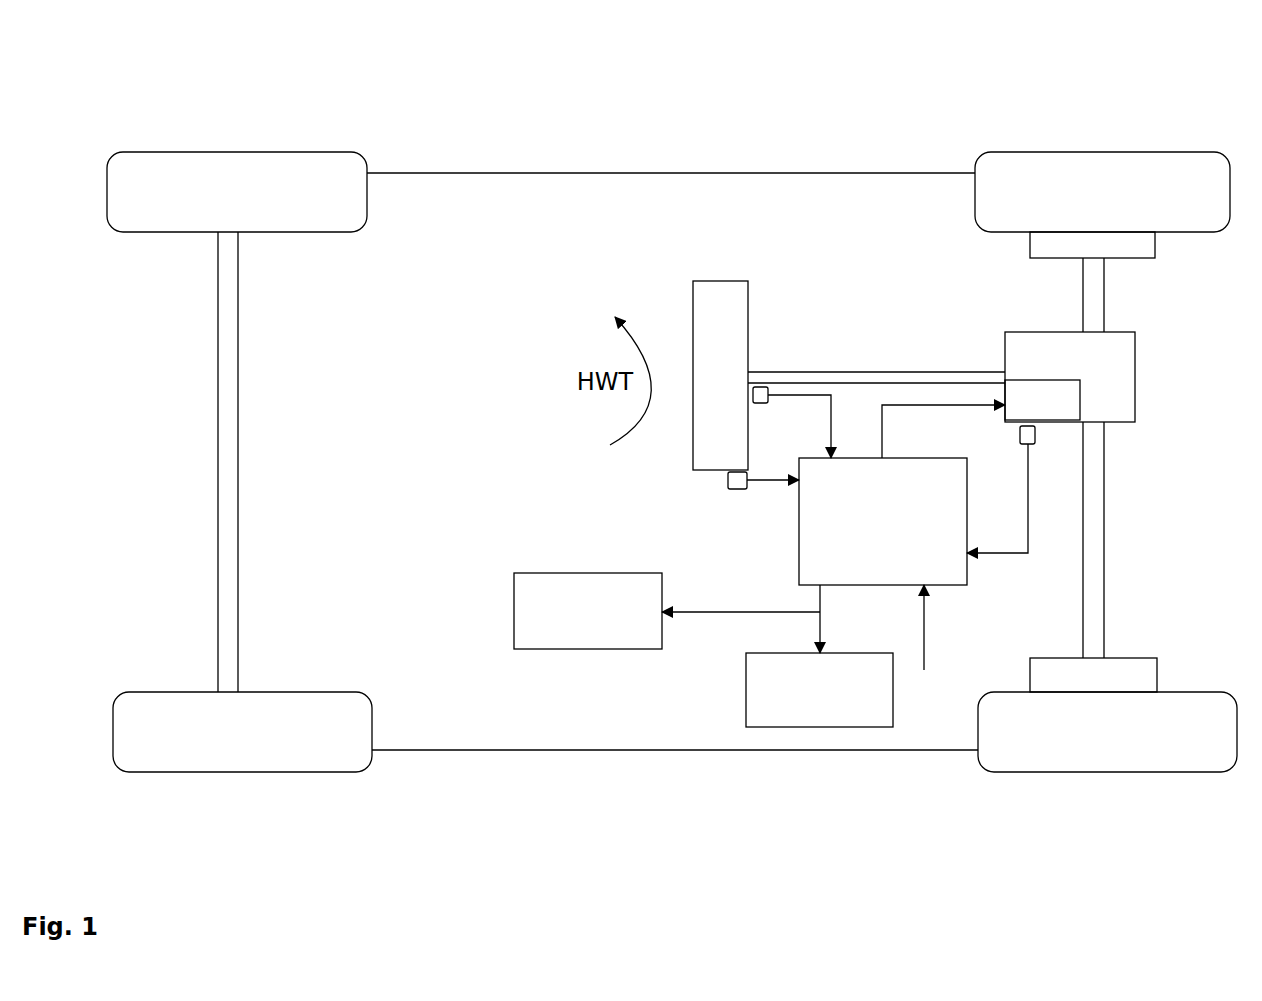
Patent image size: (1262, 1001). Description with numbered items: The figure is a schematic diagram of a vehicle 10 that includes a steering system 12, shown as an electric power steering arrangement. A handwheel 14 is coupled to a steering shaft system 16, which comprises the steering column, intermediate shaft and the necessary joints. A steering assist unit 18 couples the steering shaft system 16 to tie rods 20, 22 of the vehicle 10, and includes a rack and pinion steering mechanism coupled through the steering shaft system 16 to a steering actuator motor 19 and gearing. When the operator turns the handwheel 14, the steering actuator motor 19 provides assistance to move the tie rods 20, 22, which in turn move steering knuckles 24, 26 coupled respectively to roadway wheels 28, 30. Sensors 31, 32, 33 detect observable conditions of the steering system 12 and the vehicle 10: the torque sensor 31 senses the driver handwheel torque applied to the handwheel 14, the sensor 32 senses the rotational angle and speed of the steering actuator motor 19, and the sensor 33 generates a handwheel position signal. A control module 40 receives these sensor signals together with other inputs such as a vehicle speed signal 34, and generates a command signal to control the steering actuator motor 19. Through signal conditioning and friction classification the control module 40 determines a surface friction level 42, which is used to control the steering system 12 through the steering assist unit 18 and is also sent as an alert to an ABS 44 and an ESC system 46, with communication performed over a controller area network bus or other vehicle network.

The vehicle 10 is at (715, 67).
The steering system 12 is at (842, 258).
The handwheel 14 is at (720, 281).
The steering shaft system 16 is at (843, 371).
The steering assist unit 18 is at (1135, 375).
The steering actuator motor 19 is at (1060, 414).
The tie rod 20 is at (1104, 305).
The tie rod 22 is at (1105, 515).
The steering knuckle 24 is at (1030, 236).
The steering knuckle 26 is at (1062, 657).
The roadway wheel 28 is at (1145, 152).
The roadway wheel 30 is at (1165, 690).
The torque sensor 31 is at (758, 405).
The motor angle and speed sensor 32 is at (1037, 432).
The handwheel position sensor 33 is at (735, 490).
The vehicle speed signal 34 is at (924, 645).
The control module 40 is at (905, 458).
The surface friction level 42 is at (820, 637).
The ABS 44 is at (525, 572).
The ESC system 46 is at (746, 690).